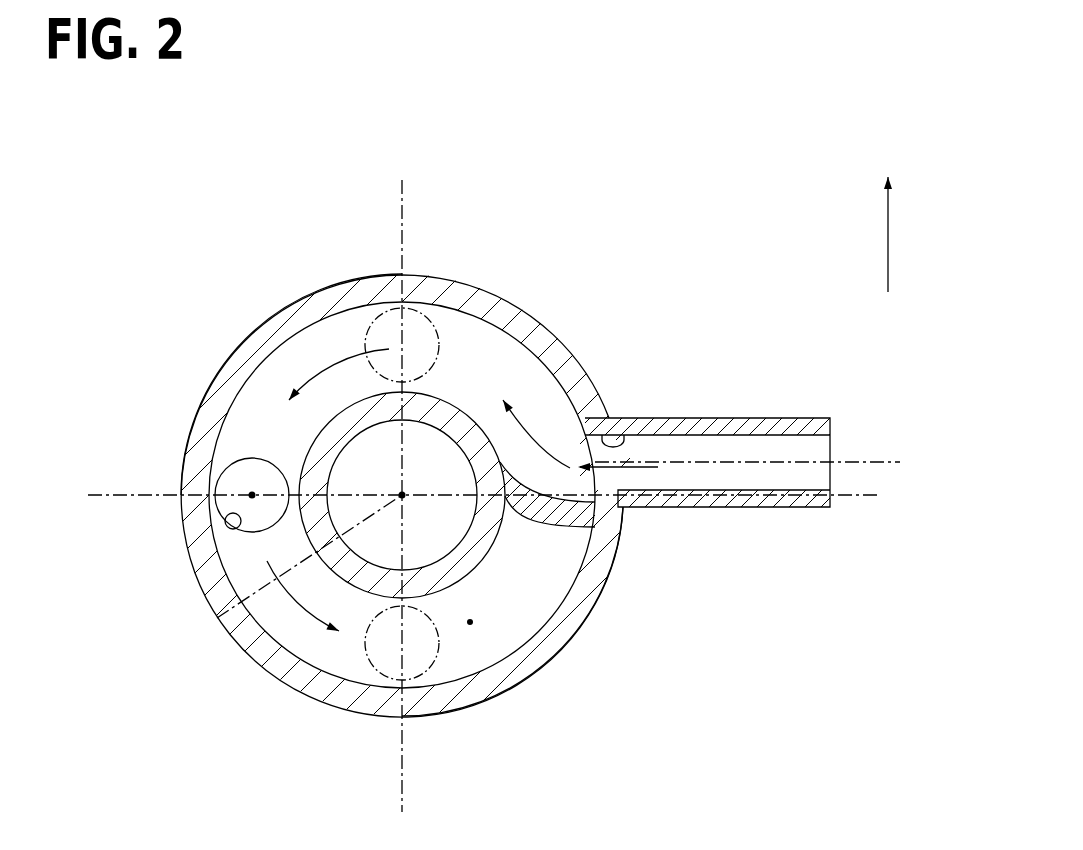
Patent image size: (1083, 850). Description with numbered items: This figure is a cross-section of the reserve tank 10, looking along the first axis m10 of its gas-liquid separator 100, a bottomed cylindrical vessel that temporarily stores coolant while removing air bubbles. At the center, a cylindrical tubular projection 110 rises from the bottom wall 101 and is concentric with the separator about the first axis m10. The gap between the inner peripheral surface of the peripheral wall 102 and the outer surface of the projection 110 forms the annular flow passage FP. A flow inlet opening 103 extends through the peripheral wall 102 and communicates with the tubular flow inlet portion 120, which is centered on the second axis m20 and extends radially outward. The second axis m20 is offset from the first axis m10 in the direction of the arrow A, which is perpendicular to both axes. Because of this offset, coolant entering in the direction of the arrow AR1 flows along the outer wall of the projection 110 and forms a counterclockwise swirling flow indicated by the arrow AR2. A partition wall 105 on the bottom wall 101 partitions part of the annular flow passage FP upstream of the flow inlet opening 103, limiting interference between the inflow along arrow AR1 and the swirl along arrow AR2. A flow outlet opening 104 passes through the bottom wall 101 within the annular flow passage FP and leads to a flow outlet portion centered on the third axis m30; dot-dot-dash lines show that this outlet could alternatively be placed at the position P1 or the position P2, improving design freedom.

The reserve tank 10 is at (697, 150).
The gas-liquid separator 100 is at (548, 325).
The bottom wall 101 is at (515, 620).
The peripheral wall 102 is at (503, 298).
The flow inlet opening 103 is at (627, 418).
The flow outlet opening 104 is at (230, 523).
The partition wall 105 is at (569, 533).
The projection 110 is at (280, 437).
The flow inlet portion 120 is at (757, 417).
The first axis m10 is at (217, 618).
The second axis m20 is at (863, 460).
The third axis m30 is at (252, 495).
The position P1 is at (440, 343).
The position P2 is at (442, 665).
The annular flow passage FP is at (470, 622).
The arrow AR1 is at (640, 467).
The arrow AR2 is at (323, 367).
The arrow A is at (888, 217).